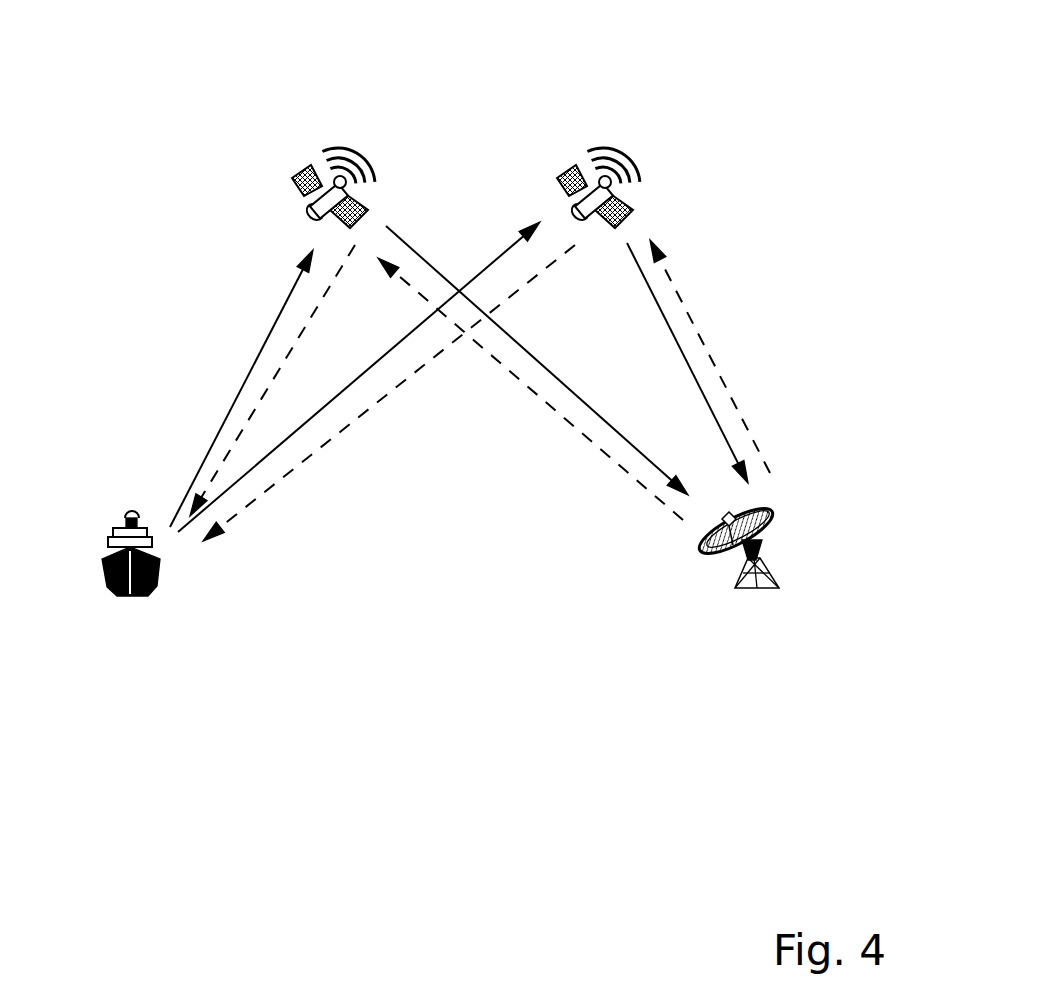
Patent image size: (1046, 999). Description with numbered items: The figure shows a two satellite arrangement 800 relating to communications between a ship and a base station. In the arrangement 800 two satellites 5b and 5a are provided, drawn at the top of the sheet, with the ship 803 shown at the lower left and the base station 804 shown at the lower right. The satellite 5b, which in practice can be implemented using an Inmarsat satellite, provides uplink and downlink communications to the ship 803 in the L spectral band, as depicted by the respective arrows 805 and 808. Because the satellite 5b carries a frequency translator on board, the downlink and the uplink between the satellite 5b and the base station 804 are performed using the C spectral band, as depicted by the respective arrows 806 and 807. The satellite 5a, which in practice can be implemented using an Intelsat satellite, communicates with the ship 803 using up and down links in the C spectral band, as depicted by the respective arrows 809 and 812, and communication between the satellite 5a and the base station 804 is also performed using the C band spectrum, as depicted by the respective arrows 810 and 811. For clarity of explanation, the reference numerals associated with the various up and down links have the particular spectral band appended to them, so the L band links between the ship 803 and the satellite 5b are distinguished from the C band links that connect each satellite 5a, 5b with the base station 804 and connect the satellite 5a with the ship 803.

The arrangement 800 is at (786, 97).
The satellite 5a is at (567, 171).
The satellite 5b is at (302, 171).
The ship 803 is at (102, 558).
The base station 804 is at (768, 512).
The uplink arrow 805 is at (281, 309).
The downlink arrow 806 is at (548, 378).
The uplink arrow 807 is at (612, 463).
The downlink arrow 808 is at (258, 402).
The uplink arrow 809 is at (362, 372).
The downlink arrow 810 is at (673, 337).
The uplink arrow 811 is at (728, 284).
The downlink arrow 812 is at (307, 527).